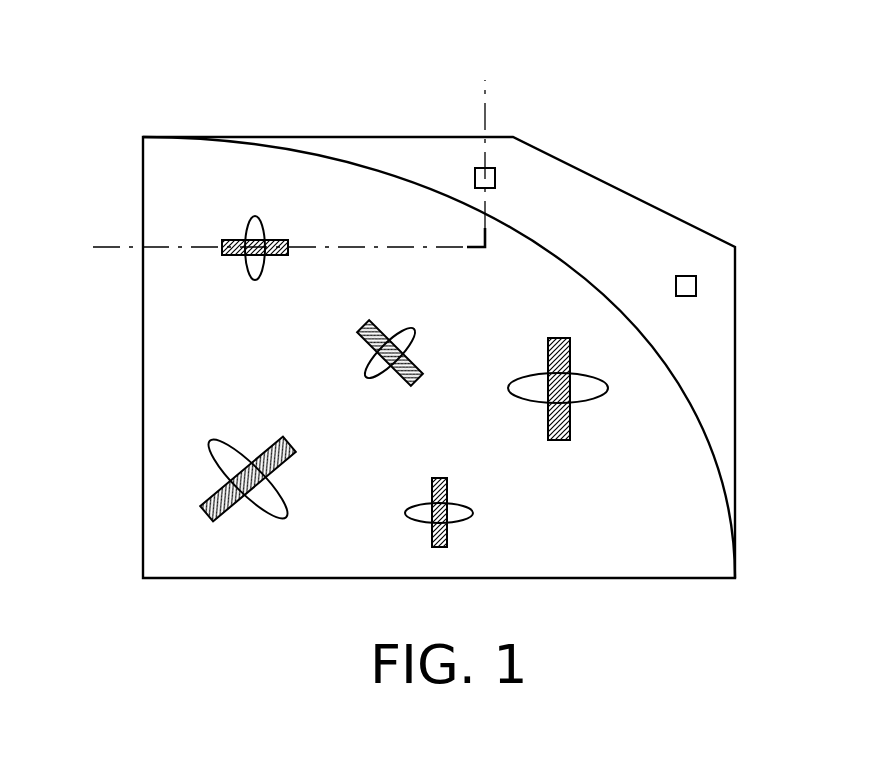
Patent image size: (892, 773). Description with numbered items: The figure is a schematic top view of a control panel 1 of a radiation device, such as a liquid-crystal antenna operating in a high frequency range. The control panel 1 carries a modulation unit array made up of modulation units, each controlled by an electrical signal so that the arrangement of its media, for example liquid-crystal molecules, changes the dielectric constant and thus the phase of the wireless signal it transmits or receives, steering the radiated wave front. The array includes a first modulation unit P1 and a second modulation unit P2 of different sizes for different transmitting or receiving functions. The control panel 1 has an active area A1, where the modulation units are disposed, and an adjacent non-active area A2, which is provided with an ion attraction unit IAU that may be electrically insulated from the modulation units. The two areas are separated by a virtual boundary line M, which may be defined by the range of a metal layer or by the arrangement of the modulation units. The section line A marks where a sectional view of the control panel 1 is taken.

The display device 1 is at (68, 49).
The first pattern P1 is at (255, 215).
The second pattern P2 is at (220, 467).
The image acquisition unit IAU is at (495, 178).
The first area A1 is at (678, 568).
The second area A2 is at (722, 355).
The boundary M is at (698, 420).
The section line A-A' A is at (281, 157).